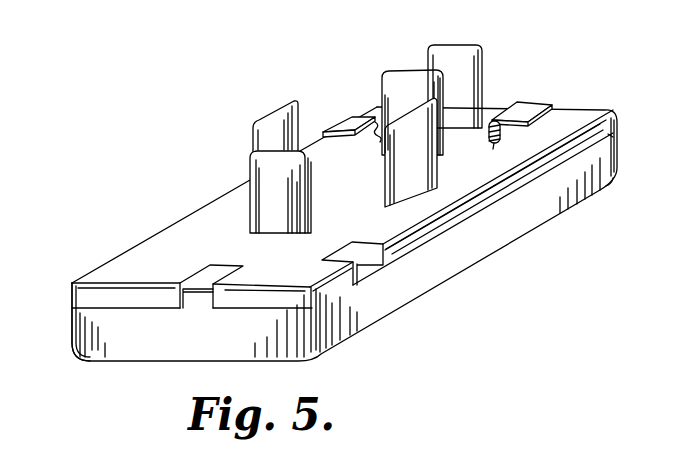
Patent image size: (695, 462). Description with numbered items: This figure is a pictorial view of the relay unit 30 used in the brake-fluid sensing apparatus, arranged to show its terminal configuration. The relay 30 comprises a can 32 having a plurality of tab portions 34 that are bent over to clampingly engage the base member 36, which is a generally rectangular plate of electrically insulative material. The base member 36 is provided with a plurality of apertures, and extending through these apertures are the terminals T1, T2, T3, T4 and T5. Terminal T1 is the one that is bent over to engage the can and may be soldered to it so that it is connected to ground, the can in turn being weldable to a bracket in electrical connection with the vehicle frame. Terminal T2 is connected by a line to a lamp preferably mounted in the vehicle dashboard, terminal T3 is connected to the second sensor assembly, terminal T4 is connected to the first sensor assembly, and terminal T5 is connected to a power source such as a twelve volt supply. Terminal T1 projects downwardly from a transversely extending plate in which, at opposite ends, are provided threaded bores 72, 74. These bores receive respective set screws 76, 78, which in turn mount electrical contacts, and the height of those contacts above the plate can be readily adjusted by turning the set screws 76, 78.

The relay unit 30 is at (128, 241).
The can 32 is at (616, 147).
The tab portions 34 is at (207, 264).
The base member 36 is at (68, 293).
The terminal T1 is at (477, 61).
The terminal T2 is at (397, 76).
The terminal T3 is at (273, 118).
The terminal T4 is at (393, 160).
The terminal T5 is at (255, 188).
The bore 72 is at (382, 141).
The bore 74 is at (491, 144).
The set screw 76 is at (502, 133).
The set screw 78 is at (371, 136).